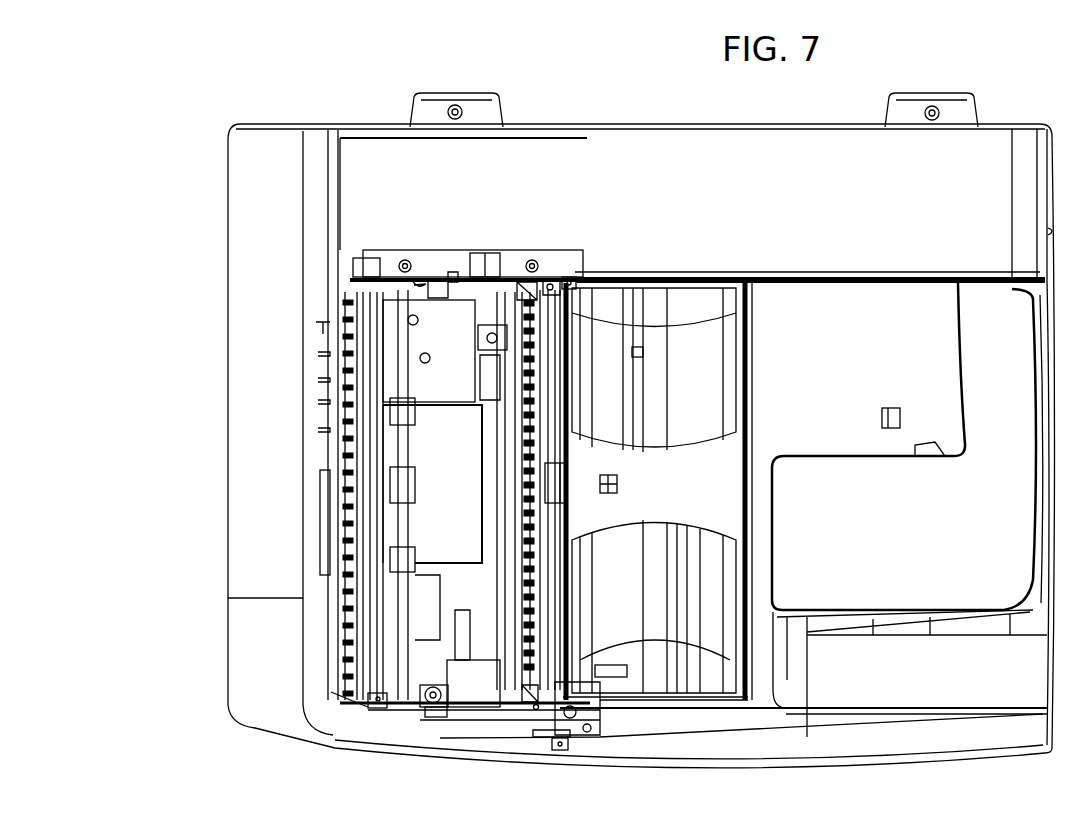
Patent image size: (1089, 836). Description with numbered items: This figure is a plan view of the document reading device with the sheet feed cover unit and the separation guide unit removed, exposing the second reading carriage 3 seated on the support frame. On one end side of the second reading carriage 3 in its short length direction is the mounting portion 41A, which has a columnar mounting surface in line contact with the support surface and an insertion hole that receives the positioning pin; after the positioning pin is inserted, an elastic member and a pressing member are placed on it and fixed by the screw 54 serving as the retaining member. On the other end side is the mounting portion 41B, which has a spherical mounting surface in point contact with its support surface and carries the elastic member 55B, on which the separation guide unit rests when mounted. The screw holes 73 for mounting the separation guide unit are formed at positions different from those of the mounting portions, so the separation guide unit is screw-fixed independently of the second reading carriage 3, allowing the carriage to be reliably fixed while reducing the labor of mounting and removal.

The second reading carriage 3 is at (448, 479).
The mounting portion 41A is at (432, 278).
The mounting portion 41B is at (549, 285).
The screw 54 is at (449, 272).
The elastic member 55B is at (525, 262).
The screw holes 73 is at (418, 277).